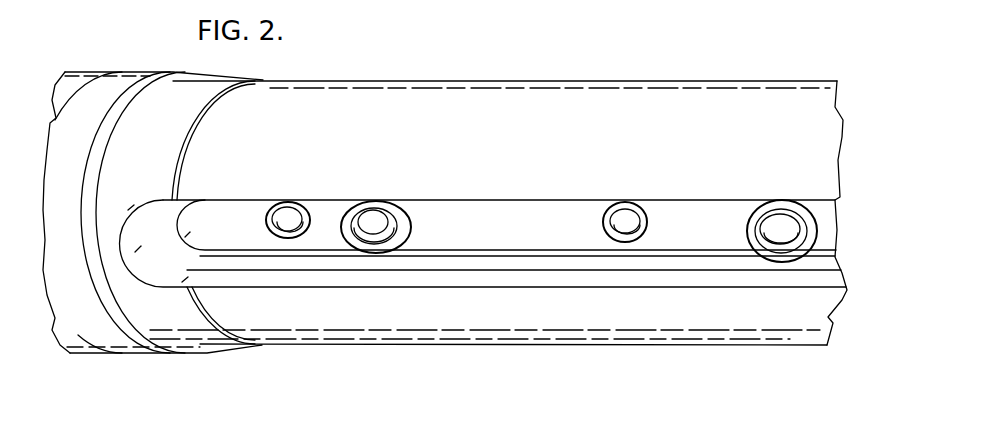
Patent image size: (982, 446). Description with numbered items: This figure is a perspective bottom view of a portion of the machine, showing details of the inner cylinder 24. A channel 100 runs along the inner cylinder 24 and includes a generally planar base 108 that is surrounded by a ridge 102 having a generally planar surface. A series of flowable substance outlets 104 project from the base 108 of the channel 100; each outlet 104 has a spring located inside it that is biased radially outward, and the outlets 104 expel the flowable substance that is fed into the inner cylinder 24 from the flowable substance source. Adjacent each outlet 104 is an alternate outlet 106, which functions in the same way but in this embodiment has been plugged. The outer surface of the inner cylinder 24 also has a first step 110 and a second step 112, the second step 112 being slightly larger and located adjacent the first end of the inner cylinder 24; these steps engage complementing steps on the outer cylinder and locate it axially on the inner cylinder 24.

The inner cylinder 24 is at (478, 103).
The channel 100 is at (562, 237).
The ridge 102 is at (457, 267).
The flowable substance outlets 104 is at (806, 207).
The alternate outlets 106 is at (637, 237).
The base 108 is at (258, 233).
The first step 110 is at (263, 80).
The second step 112 is at (142, 335).